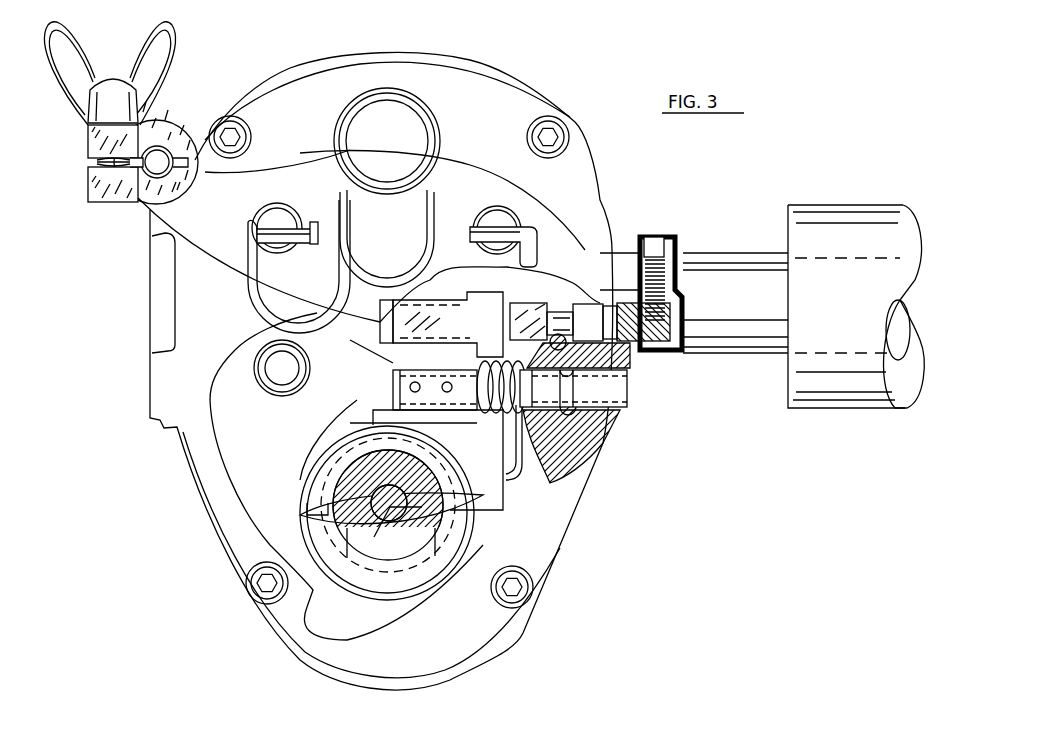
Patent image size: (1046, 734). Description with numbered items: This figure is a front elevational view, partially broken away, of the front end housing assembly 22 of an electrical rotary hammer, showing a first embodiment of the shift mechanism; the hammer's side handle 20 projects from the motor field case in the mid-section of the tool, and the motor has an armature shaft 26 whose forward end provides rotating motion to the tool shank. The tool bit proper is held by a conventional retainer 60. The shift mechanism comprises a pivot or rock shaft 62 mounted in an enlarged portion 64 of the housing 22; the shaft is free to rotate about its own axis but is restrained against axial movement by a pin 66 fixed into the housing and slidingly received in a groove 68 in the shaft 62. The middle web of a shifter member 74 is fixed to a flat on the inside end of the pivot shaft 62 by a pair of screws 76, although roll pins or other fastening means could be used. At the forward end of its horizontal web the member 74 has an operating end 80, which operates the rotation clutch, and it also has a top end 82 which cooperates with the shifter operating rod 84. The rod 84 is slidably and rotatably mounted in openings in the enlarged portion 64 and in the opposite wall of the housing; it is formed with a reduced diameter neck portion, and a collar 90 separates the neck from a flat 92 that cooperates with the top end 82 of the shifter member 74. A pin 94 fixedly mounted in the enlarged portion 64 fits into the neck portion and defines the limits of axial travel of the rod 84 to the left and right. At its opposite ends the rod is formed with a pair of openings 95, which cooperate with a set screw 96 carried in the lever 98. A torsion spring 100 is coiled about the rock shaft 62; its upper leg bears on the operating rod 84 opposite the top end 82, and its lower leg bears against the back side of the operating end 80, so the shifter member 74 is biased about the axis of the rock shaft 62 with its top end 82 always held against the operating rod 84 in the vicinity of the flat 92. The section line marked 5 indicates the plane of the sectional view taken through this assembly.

The section line 5- 5 is at (518, 72).
The side handle 20 is at (803, 280).
The front end housing assembly 22 is at (163, 448).
The armature shaft 26 is at (300, 497).
The retainer 60 is at (368, 95).
The pivot or rock shaft 62 is at (607, 387).
The enlarged portion 64 is at (543, 417).
The pin 66 is at (575, 420).
The groove 68 is at (571, 392).
The shifter member 74 is at (380, 368).
The screws 76 is at (350, 400).
The operating end 80 is at (483, 497).
The top end 82 is at (440, 330).
The shifter operating rod 84 is at (440, 300).
The collar 90 is at (565, 318).
The flat 92 is at (540, 315).
The pin 94 is at (563, 348).
The openings 95 is at (667, 320).
The set screw 96 is at (680, 290).
The lever 98 is at (660, 233).
The torsion spring 100 is at (552, 452).